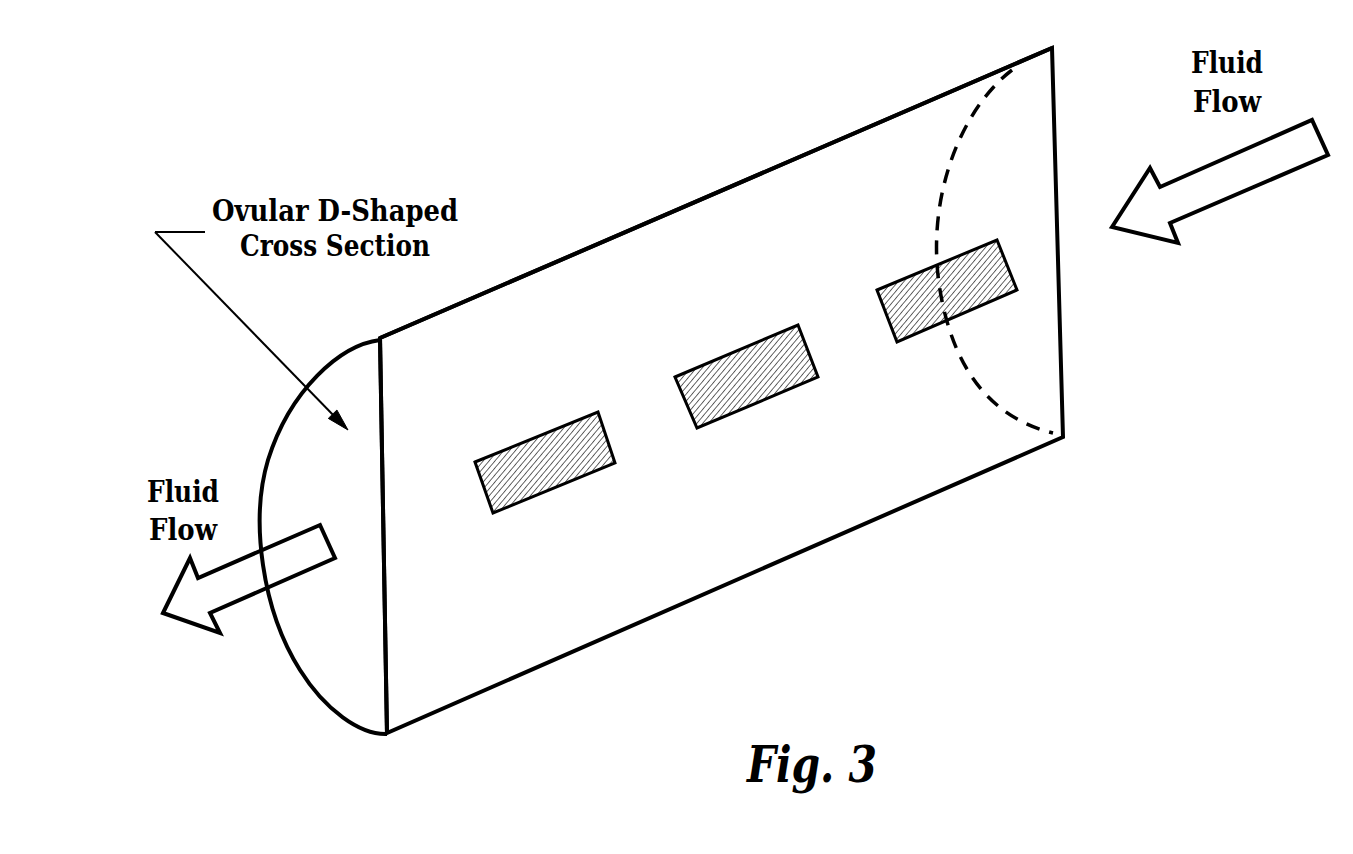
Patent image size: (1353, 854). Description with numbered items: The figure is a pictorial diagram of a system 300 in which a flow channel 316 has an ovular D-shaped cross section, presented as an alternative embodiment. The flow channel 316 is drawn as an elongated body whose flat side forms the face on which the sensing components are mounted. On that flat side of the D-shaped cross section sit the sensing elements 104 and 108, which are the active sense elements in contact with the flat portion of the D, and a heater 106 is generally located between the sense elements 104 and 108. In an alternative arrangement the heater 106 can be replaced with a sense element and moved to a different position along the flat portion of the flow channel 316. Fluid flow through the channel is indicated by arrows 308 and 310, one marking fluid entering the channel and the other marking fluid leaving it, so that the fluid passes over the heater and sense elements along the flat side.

The system 300 is at (360, 113).
The flow channel 316 is at (713, 192).
The sensing element 104 is at (530, 438).
The heater 106 is at (727, 353).
The sensing element 108 is at (917, 270).
The arrow 308 is at (1217, 203).
The outgoing fluid flow 310 is at (190, 622).